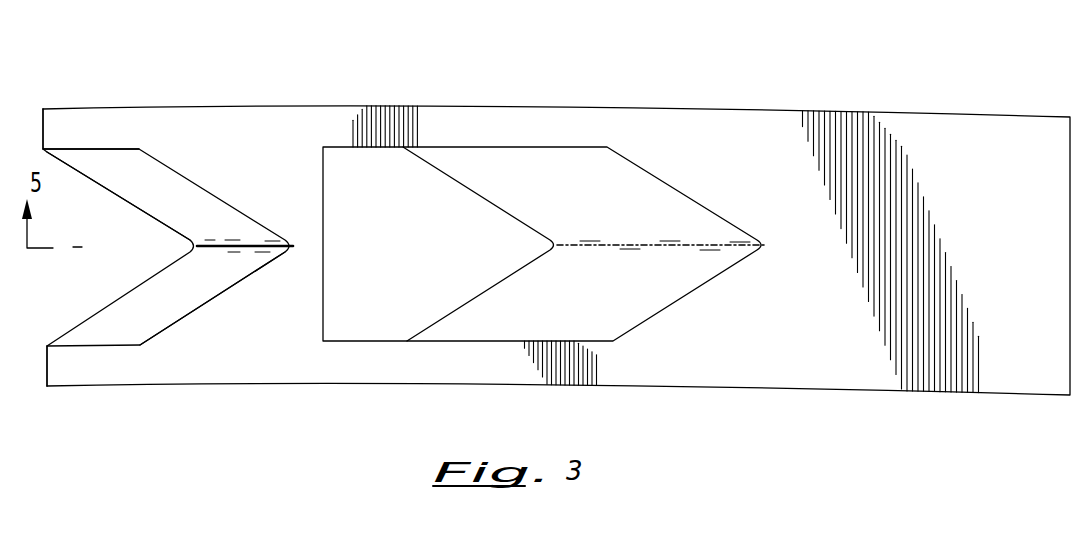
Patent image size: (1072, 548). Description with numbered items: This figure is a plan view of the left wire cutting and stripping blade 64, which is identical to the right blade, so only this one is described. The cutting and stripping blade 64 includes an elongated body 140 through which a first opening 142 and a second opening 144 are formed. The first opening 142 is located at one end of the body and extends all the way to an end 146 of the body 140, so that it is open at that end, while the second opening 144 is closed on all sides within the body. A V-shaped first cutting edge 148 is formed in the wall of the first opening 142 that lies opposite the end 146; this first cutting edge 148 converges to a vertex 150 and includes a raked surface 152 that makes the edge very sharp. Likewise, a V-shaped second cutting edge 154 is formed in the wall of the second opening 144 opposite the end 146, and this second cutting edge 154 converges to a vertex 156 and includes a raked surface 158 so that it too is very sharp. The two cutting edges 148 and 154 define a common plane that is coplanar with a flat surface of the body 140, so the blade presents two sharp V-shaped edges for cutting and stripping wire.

The wire cutting and stripping blade 64 is at (598, 88).
The elongated body 140 is at (941, 112).
The first opening 142 is at (108, 277).
The second opening 144 is at (358, 195).
The end 146 is at (43, 128).
The first cutting edge 148 is at (147, 212).
The vertex 150 is at (195, 247).
The raked surface 152 is at (188, 290).
The second cutting edge 154 is at (478, 192).
The vertex 156 is at (553, 244).
The raked surface 158 is at (638, 182).